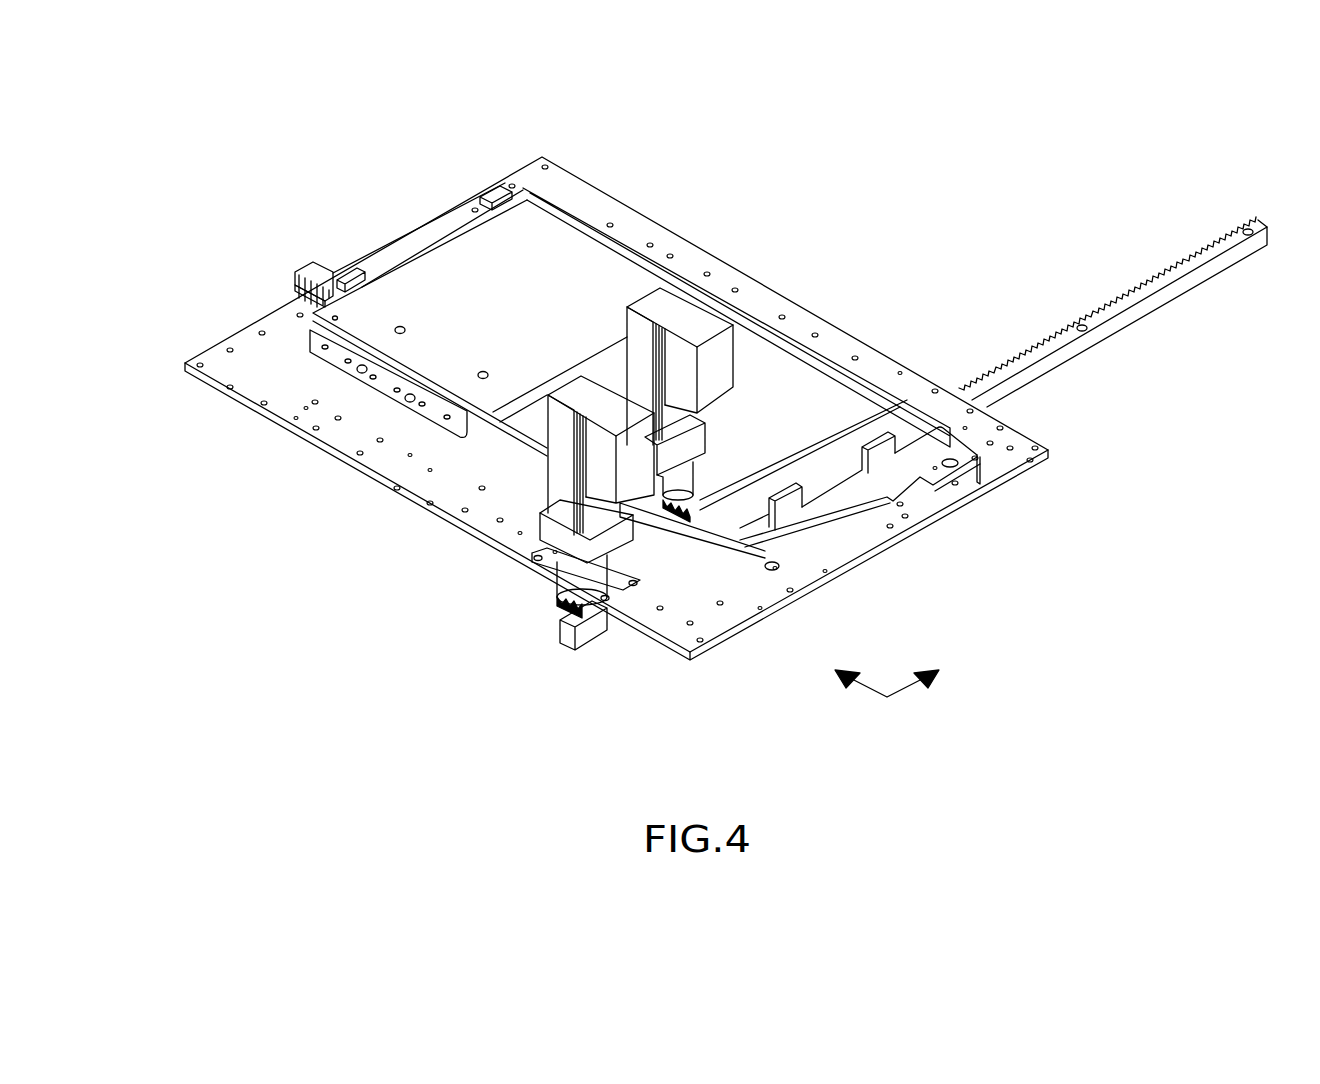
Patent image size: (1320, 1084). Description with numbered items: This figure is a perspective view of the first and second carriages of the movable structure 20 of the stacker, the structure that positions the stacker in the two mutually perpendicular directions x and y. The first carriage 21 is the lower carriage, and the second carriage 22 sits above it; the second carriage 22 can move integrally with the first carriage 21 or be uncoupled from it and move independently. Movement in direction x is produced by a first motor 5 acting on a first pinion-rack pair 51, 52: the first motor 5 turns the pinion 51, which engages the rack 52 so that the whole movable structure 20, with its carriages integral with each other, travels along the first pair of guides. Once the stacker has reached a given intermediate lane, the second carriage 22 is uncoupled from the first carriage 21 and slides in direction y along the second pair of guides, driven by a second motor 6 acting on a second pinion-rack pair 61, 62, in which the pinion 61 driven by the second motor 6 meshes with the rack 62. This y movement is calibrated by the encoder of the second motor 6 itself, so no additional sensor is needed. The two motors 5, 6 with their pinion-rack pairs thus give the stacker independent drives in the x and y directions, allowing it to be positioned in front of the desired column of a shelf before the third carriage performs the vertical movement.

The movable structure 20 is at (356, 515).
The first carriage 21 is at (280, 400).
The second carriage 22 is at (480, 286).
The rack of the second pinion-rack pair 62 is at (297, 290).
The second motor 6 is at (668, 312).
The pinion of the second pinion-rack pair 61 is at (678, 527).
The first motor 5 is at (560, 472).
The pinion of the first pinion-rack pair 51 is at (557, 606).
The rack of the first pinion-rack pair 52 is at (1060, 333).